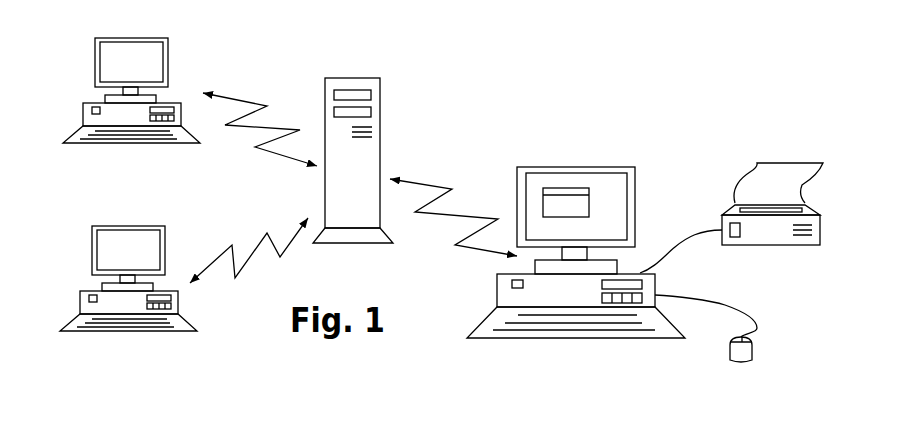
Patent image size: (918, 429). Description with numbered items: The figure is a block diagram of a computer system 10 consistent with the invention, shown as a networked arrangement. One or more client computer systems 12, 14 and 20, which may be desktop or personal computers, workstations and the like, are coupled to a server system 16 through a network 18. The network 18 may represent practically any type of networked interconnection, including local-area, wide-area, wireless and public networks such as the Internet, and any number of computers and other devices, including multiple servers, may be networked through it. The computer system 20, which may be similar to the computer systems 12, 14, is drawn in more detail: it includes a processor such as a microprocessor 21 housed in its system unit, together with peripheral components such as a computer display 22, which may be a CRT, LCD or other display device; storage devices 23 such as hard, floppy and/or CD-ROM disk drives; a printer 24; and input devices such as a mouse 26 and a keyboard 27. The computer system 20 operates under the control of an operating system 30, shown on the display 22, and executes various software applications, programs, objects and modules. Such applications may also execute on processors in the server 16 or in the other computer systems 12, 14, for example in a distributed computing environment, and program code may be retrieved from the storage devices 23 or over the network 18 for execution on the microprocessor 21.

The computer system 10 is at (503, 85).
The client computer system 12 is at (97, 53).
The client computer system 14 is at (93, 228).
The server system 16 is at (341, 78).
The network 18 is at (267, 233).
The computer system 20 is at (564, 247).
The microprocessor 21 is at (548, 297).
The computer display 22 is at (551, 186).
The storage devices 23 is at (617, 303).
The printer 24 is at (737, 210).
The mouse 26 is at (750, 355).
The keyboard 27 is at (483, 335).
The operating system 30 is at (540, 200).